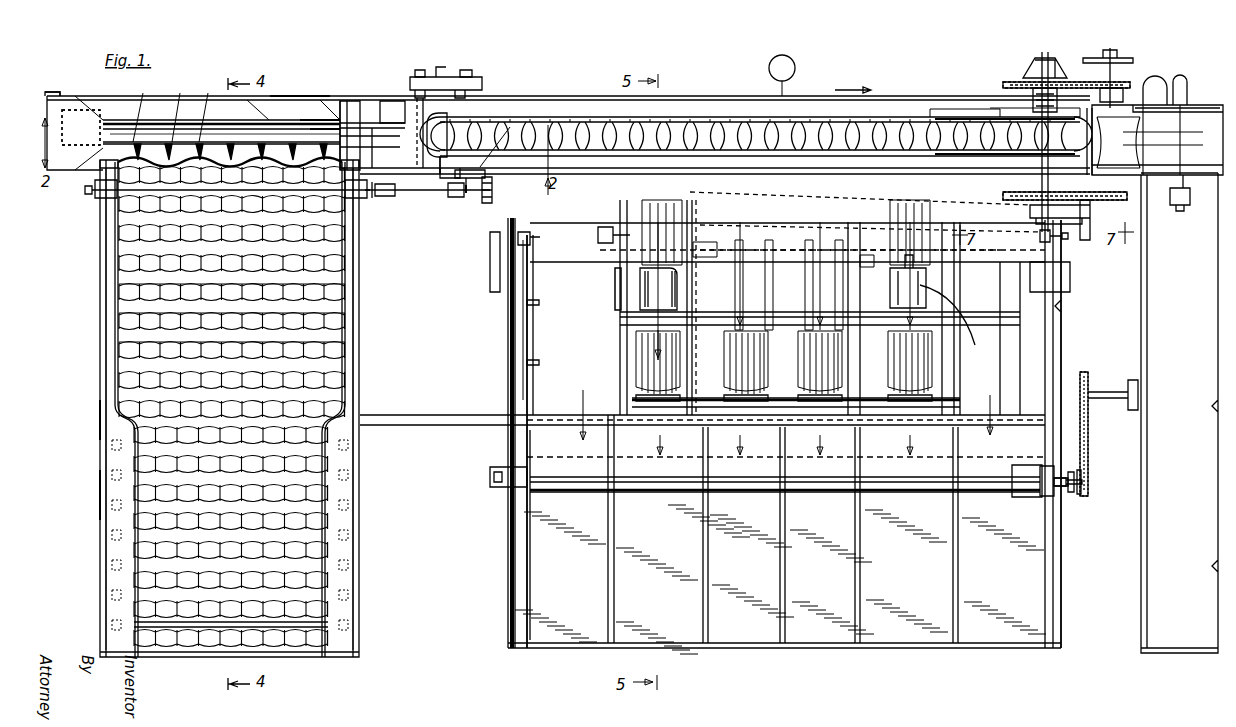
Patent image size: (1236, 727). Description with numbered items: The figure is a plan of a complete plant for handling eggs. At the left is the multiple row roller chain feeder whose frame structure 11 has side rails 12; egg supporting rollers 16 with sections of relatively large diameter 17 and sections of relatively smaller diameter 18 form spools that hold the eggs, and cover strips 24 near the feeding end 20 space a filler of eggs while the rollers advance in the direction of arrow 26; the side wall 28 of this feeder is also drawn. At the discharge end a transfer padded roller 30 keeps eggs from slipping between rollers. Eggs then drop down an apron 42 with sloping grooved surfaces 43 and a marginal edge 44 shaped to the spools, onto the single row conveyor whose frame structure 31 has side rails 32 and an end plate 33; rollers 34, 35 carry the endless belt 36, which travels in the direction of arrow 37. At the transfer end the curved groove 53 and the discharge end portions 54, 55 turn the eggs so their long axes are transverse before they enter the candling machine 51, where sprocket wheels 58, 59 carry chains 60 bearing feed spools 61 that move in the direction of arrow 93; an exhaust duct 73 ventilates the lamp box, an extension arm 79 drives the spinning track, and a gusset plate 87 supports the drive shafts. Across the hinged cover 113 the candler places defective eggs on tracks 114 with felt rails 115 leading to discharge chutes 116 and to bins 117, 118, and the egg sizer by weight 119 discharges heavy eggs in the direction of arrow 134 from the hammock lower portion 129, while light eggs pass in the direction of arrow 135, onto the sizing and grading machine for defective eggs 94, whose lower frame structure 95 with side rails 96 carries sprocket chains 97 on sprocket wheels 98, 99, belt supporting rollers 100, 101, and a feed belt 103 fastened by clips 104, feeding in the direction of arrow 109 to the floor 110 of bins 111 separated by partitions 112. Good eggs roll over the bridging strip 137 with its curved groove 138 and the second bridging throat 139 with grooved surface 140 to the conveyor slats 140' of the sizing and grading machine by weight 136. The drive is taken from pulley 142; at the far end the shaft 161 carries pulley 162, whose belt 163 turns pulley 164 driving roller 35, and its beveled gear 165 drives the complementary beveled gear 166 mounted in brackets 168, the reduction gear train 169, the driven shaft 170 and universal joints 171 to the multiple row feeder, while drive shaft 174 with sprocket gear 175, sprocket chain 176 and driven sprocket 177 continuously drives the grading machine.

The frame structure 11 is at (98, 488).
The side rails 12 is at (103, 401).
The egg supporting rollers 16 is at (124, 280).
The sections of relatively large diameter 17 is at (154, 306).
The sections of relatively smaller diameter 18 is at (164, 339).
The feeding end 20 is at (204, 656).
The cover strips 24 is at (338, 522).
The arrow 26 is at (295, 595).
The side wall 28 is at (345, 283).
The transfer padded roller 30 is at (158, 190).
The frame structure 31 is at (274, 108).
The side rails 32 is at (308, 120).
The end plate 33 is at (52, 94).
The roller 34 is at (81, 107).
The roller 35 is at (381, 128).
The endless belt 36 is at (320, 127).
The arrow 37 is at (295, 130).
The apron 42 is at (142, 108).
The sloping grooved surfaces 43 is at (179, 108).
The marginal edge 44 is at (209, 108).
The candling machine 51 is at (716, 103).
The curved groove 53 is at (448, 77).
The discharge end portion 54 is at (400, 190).
The discharge end portion 55 is at (374, 103).
The sprocket wheels 58 is at (452, 131).
The sprocket wheels 59 is at (1020, 81).
The chains 60 is at (947, 111).
The feed spools or rollers 61 is at (910, 111).
The exhaust duct 73 is at (792, 77).
The extension arm 79 is at (615, 193).
The gusset plate 87 is at (993, 101).
The arrow 93 is at (853, 80).
The sizing and grading machine for defective eggs 94 is at (498, 298).
The lower frame structure 95 is at (514, 552).
The side rails 96 is at (1045, 576).
The sprocket chains 97 is at (510, 371).
The sprocket wheels 98 is at (1070, 235).
The sprocket wheels 99 is at (1056, 495).
The belt supporting roller 100 is at (1016, 494).
The belt supporting roller 101 is at (1015, 260).
The feed belt 103 is at (530, 328).
The clips 104 is at (520, 352).
The arrow 109 is at (582, 441).
The floor 110 is at (785, 510).
The bins 111 is at (989, 650).
The partitions 112 is at (606, 594).
The hinged cover 113 is at (794, 229).
The tracks 114 is at (740, 262).
The felt rails 115 is at (810, 264).
The discharge chutes 116 is at (783, 366).
The bin 117 is at (735, 635).
The bin 118 is at (833, 635).
The egg sizer by weight 119 is at (603, 280).
The lower portion 129 is at (784, 328).
The arrow 134 is at (583, 330).
The arrow 135 is at (658, 370).
The sizing and grading machine by weight 136 is at (1158, 290).
The bridging strip 137 is at (1048, 81).
The curved groove 138 is at (1068, 169).
The second bridging throat 139 is at (1125, 105).
The grooved surface 140 is at (1150, 171).
The conveyor slats 140' is at (1173, 188).
The pulley 142 is at (1115, 57).
The shaft 161 is at (468, 160).
The pulley 162 is at (468, 69).
The belt 163 is at (436, 67).
The pulley 164 is at (413, 69).
The beveled gear 165 is at (478, 158).
The complementary beveled gear 166 is at (452, 198).
The brackets 168 is at (446, 188).
The reduction gear train 169 is at (492, 199).
The driven shaft 170 is at (466, 196).
The universal joints 171 is at (385, 197).
The drive shaft 174 is at (1110, 392).
The sprocket gear 175 is at (1084, 372).
The sprocket chain 176 is at (1088, 428).
The driven sprocket 177 is at (1086, 484).